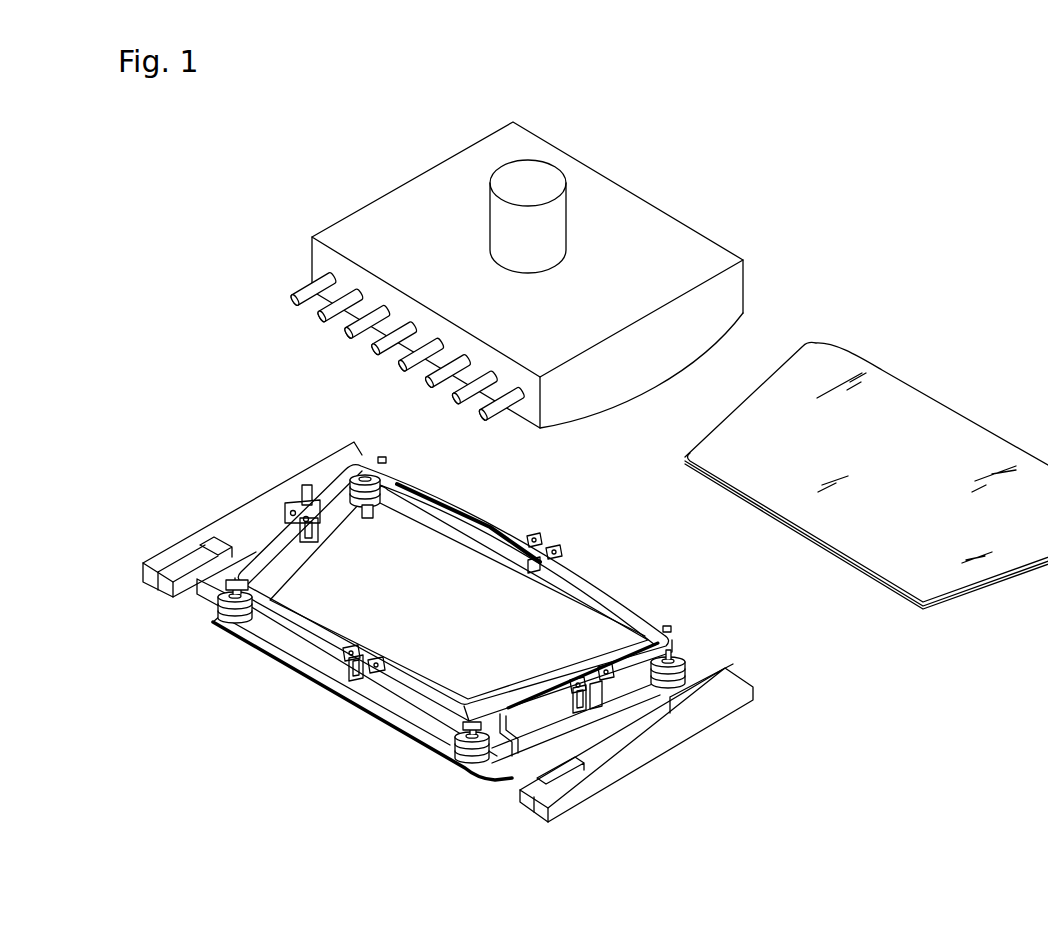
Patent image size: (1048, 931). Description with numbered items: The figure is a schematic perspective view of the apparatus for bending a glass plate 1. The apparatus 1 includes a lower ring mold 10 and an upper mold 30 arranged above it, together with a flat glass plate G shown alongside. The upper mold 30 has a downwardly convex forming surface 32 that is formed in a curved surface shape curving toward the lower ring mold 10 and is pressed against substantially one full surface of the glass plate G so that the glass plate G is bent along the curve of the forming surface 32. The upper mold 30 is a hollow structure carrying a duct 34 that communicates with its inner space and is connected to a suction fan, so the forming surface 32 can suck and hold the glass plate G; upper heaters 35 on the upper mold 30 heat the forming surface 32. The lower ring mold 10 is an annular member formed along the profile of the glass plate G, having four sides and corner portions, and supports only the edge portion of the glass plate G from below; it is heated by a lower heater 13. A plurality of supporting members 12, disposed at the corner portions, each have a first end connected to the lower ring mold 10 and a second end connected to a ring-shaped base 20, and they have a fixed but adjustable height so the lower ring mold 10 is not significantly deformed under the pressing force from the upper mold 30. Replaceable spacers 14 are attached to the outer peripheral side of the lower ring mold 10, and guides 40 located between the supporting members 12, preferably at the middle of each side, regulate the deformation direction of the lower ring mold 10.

The apparatus for bending a glass plate 1 is at (748, 184).
The glass plate G is at (955, 426).
The lower ring mold 10 is at (453, 502).
The supporting members 12 is at (217, 608).
The lower heater 13 is at (514, 746).
The spacers 14 is at (300, 497).
The base 20 is at (288, 643).
The upper mold 30 is at (489, 291).
The forming surface 32 is at (600, 411).
The duct 34 is at (499, 225).
The upper heaters 35 is at (312, 288).
The guides 40 is at (316, 529).